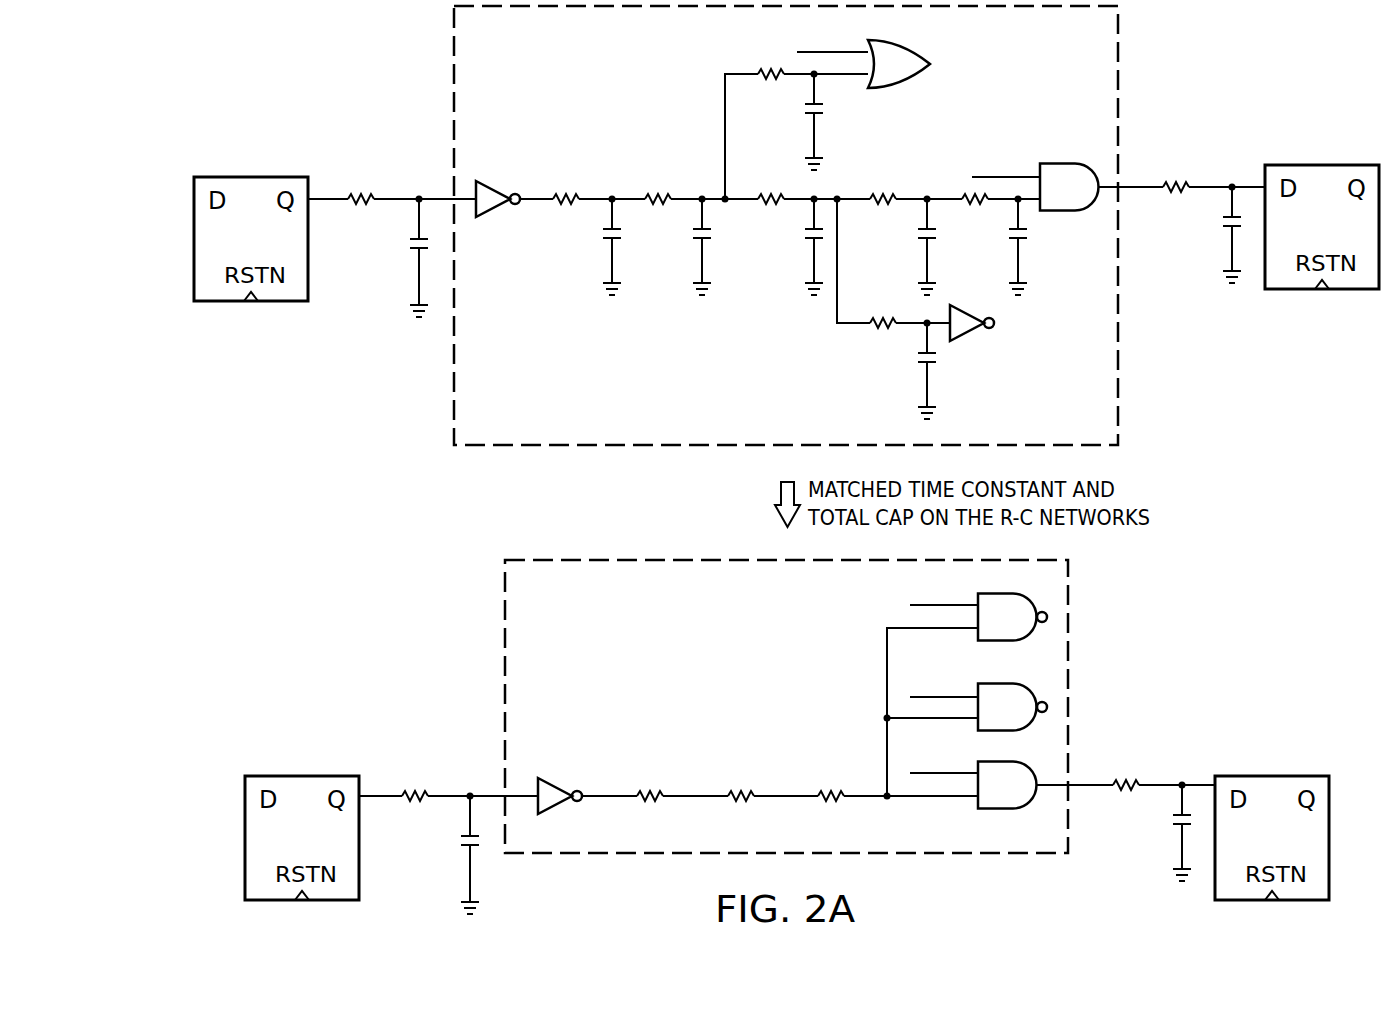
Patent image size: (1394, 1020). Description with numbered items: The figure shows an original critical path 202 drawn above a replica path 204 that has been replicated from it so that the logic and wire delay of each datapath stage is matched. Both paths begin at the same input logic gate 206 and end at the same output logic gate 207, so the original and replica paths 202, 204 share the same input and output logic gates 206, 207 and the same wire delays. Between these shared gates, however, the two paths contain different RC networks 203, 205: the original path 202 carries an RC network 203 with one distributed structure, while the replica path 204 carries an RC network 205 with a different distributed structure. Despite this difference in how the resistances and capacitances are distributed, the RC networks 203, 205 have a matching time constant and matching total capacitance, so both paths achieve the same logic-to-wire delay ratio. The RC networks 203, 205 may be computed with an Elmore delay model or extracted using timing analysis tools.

The original critical path 202 is at (132, 221).
The RC network 203 is at (447, 90).
The replica path 204 is at (219, 820).
The RC network 205 is at (1076, 622).
The input logic gate 206 is at (360, 349).
The output logic gate 207 is at (1213, 351).